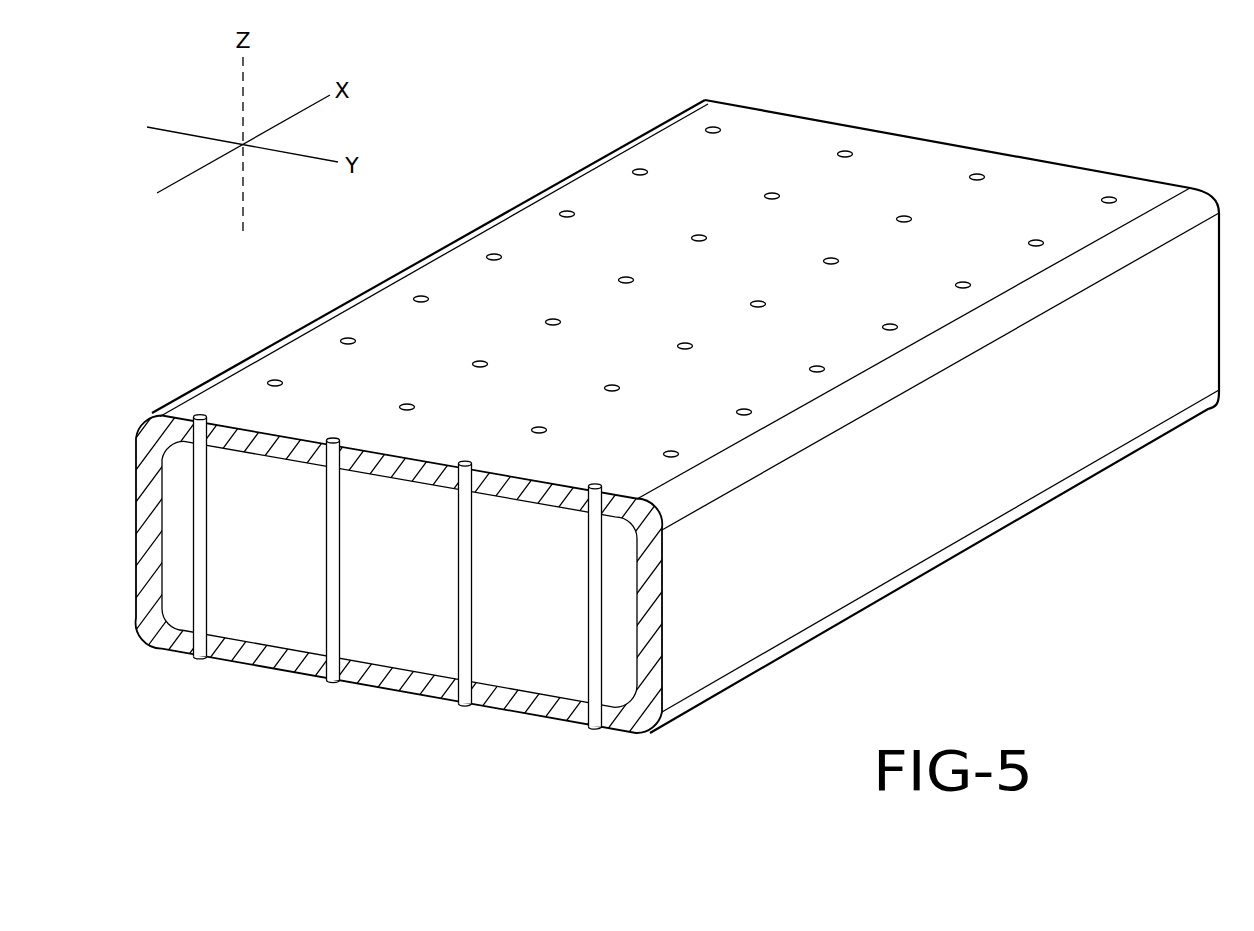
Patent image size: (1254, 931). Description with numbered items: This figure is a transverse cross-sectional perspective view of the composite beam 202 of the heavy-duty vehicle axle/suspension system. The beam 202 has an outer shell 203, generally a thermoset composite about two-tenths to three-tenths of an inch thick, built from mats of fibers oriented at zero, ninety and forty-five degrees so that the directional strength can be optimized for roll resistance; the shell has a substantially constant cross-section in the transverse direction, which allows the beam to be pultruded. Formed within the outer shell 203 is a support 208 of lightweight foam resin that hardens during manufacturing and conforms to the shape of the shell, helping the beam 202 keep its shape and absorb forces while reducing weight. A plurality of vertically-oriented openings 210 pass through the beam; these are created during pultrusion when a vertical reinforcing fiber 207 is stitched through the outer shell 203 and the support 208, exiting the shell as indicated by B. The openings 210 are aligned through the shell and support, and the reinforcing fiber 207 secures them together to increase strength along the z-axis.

The beam 202 is at (878, 607).
The outer shell 203 is at (1035, 433).
The vertical reinforcing fiber 207 is at (458, 577).
The support 208 is at (277, 548).
The vertically-oriented openings 210 is at (626, 280).
The exit location of reinforcing fiber B is at (493, 716).